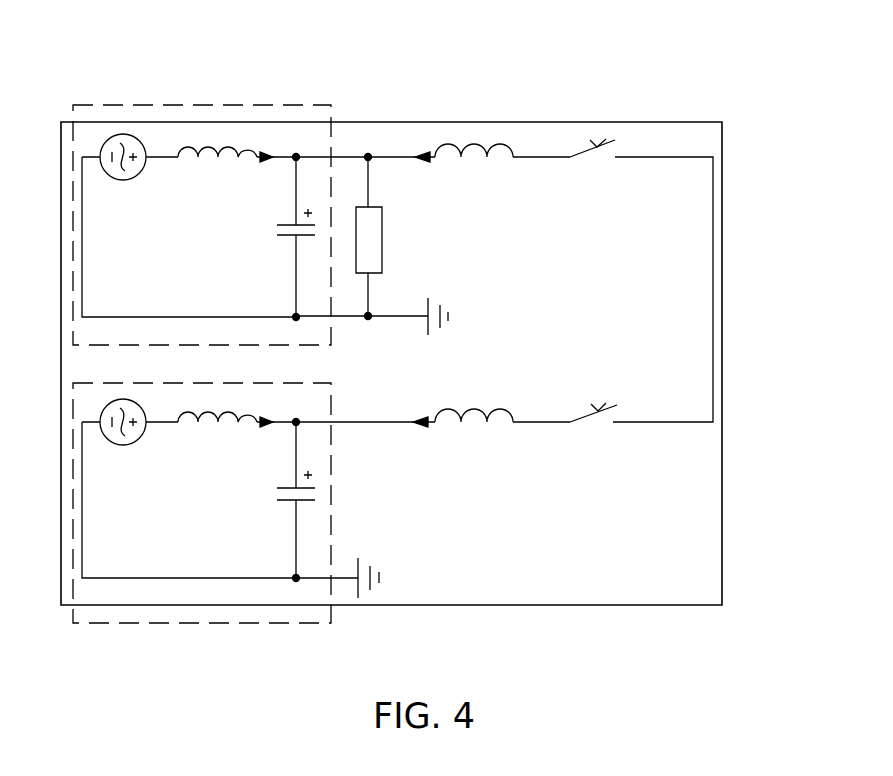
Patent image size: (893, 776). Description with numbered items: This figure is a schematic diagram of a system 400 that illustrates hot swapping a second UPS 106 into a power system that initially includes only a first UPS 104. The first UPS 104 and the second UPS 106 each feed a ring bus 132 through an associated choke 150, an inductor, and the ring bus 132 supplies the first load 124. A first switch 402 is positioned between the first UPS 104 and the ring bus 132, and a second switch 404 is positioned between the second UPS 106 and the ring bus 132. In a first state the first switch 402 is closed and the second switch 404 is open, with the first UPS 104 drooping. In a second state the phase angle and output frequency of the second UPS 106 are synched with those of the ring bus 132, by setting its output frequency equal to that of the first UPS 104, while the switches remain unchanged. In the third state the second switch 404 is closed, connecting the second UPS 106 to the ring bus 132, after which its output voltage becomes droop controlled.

The system 400 is at (637, 50).
The first UPS 104 is at (202, 103).
The second UPS 106 is at (220, 623).
The choke 150 is at (465, 143).
The first switch 402 is at (583, 150).
The second switch 404 is at (582, 413).
The first load 124 is at (382, 260).
The ring bus 132 is at (715, 288).